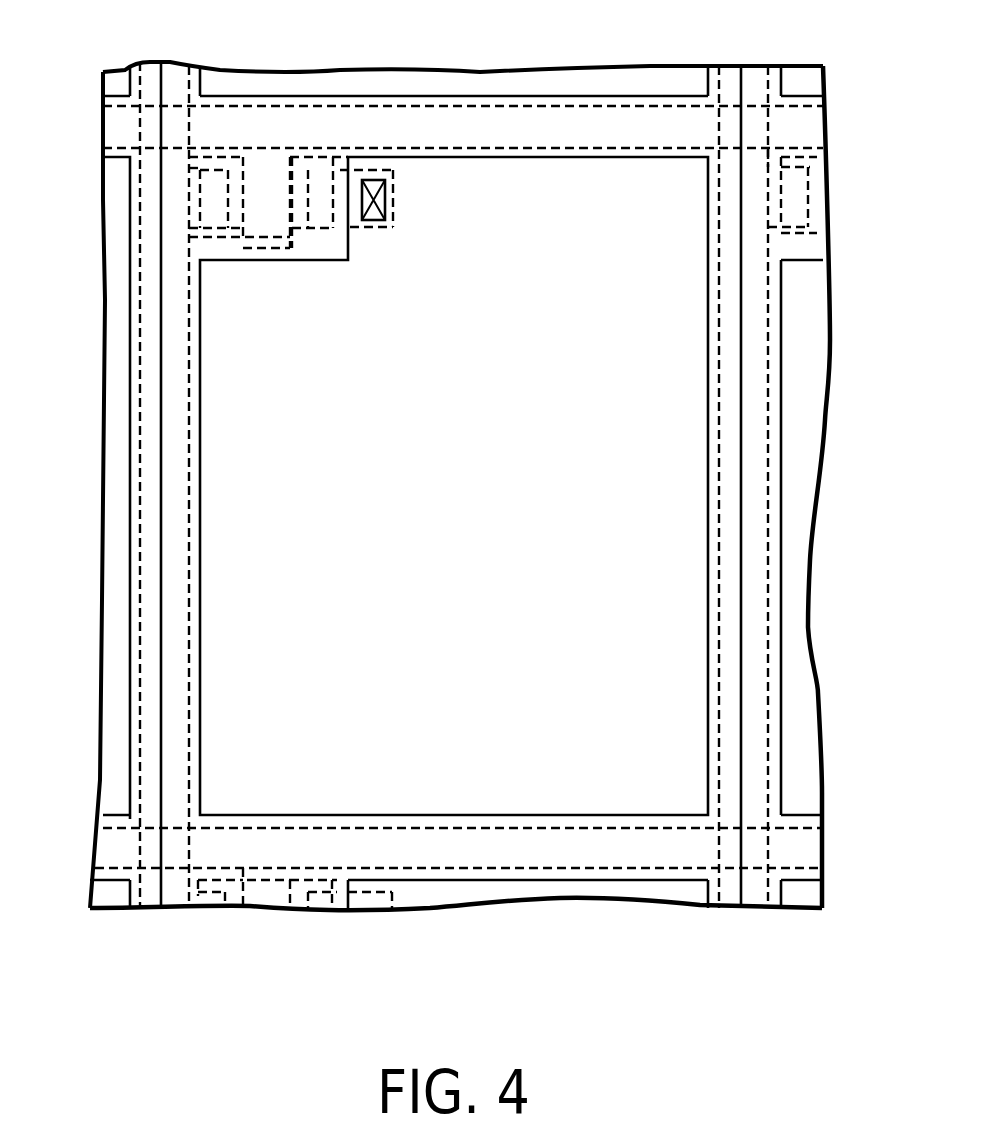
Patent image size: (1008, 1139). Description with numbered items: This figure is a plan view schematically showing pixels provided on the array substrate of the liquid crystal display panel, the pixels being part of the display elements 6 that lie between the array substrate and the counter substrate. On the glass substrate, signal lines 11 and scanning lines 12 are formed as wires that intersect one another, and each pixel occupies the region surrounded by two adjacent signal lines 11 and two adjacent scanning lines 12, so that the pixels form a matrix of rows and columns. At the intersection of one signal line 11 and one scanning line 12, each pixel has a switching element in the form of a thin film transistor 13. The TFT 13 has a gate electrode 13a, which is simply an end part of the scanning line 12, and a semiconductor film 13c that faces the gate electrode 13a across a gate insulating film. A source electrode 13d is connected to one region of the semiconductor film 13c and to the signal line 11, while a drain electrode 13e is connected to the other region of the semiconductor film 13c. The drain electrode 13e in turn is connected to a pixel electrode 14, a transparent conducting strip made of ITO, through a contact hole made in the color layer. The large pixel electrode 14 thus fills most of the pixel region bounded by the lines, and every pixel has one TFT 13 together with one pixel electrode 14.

The display element 6 is at (715, 367).
The signal line 11 is at (130, 353).
The scanning line 12 is at (485, 107).
The thin film transistor 13 is at (360, 283).
The gate electrode 13a is at (281, 250).
The semiconductor film 13c is at (320, 240).
The source electrode 13d is at (235, 238).
The drain electrode 13e is at (393, 197).
The pixel electrode 14 is at (685, 550).